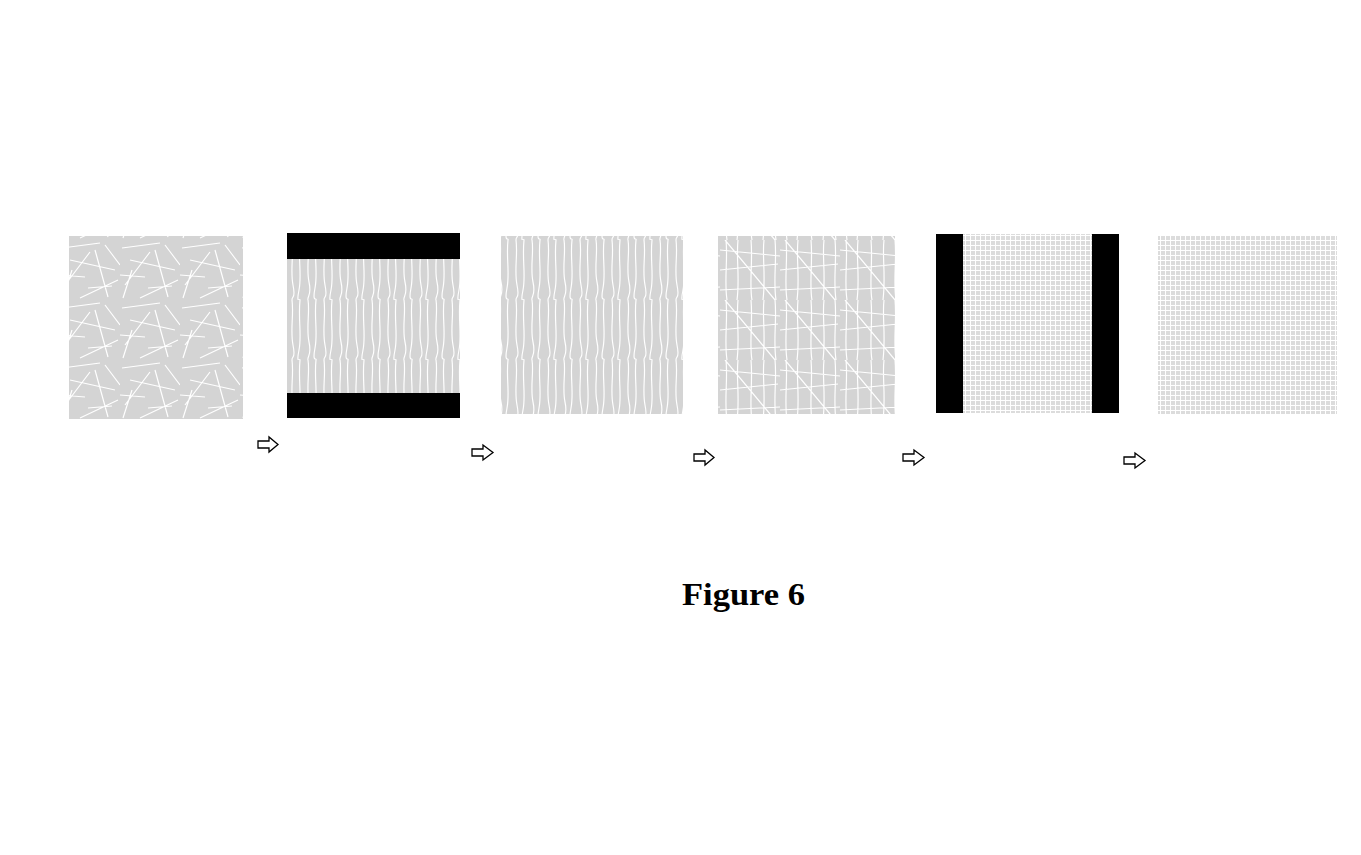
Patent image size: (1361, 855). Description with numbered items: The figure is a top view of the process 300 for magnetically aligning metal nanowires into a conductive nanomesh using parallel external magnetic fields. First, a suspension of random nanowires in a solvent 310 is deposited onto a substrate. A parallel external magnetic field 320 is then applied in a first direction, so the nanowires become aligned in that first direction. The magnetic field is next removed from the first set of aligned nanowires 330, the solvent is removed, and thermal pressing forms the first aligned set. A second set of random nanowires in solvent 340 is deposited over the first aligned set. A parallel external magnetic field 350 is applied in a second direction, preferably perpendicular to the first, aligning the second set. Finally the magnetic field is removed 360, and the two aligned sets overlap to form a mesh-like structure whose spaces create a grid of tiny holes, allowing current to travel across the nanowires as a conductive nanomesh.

The nanomesh fabrication process 300 is at (695, 80).
The suspension of nanowires in a solvent 310 is at (155, 210).
The parallel external magnetic field 320 is at (377, 210).
The first set of aligned nanowires 330 is at (600, 210).
The second set of random nanowires in solvent 340 is at (811, 210).
The parallel external magnetic field 350 is at (1024, 210).
The magnetic field removal step 360 is at (1257, 210).